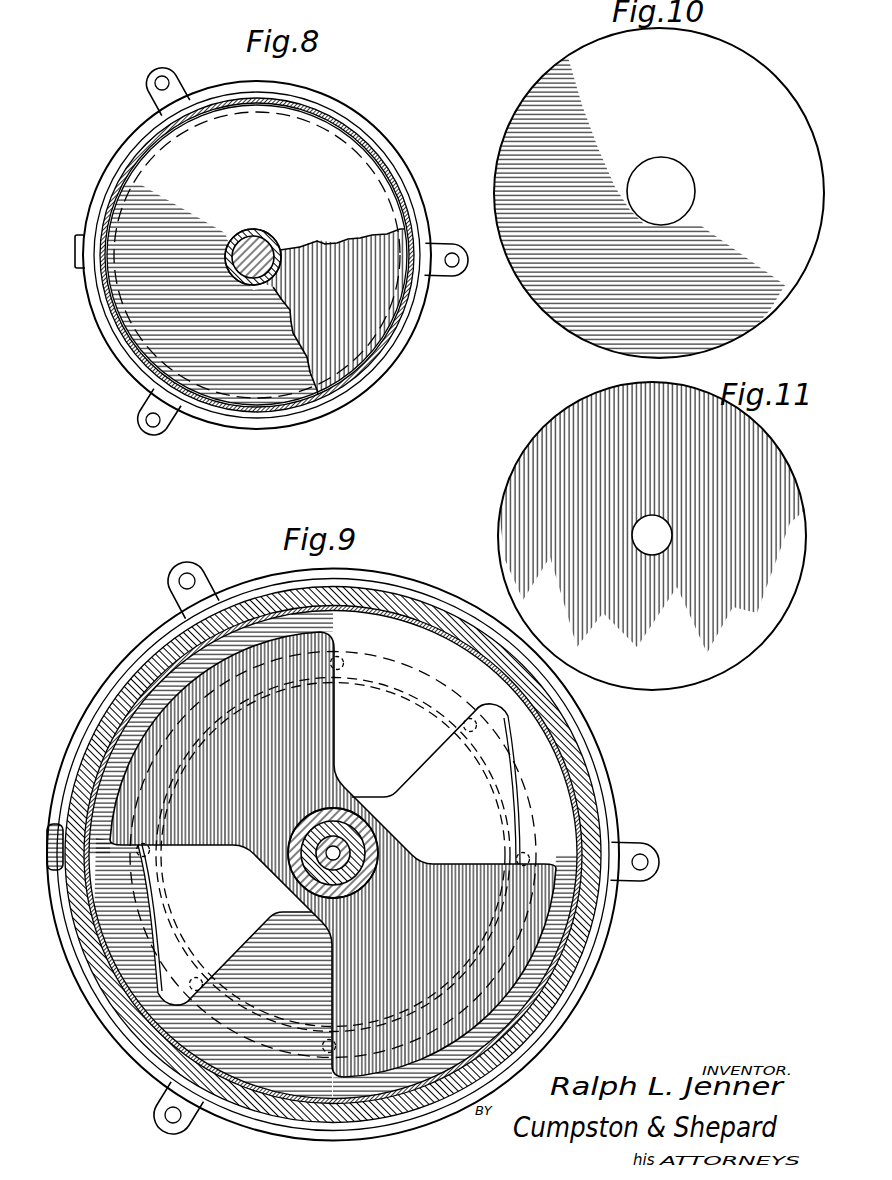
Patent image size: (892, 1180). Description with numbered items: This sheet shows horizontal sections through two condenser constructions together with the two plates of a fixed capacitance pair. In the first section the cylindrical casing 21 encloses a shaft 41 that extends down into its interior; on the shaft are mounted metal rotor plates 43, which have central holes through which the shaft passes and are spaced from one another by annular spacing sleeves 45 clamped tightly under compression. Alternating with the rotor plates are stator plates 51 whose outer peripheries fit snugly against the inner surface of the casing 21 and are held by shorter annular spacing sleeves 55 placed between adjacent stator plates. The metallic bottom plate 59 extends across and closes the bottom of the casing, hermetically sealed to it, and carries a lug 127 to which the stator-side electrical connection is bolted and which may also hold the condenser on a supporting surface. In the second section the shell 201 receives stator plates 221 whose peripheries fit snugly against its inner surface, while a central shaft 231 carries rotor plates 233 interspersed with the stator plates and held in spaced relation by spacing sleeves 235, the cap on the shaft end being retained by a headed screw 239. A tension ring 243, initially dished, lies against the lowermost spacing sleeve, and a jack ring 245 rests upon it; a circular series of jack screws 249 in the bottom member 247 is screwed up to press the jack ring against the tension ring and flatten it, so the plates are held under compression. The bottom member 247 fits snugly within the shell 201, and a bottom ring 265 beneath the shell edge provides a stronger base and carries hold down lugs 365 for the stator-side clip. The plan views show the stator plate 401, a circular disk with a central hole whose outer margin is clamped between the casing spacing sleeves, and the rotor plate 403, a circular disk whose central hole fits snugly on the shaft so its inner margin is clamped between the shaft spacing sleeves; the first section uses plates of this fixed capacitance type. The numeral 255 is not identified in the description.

In FIG. 8, the casing 21 is at (397, 193).
In FIG. 8, the spacing sleeve 55 is at (398, 190).
In FIG. 8, the shaft 41 is at (260, 233).
In FIG. 8, the annular spacing sleeve 45 is at (273, 240).
In FIG. 8, the stator plate 51 is at (251, 262).
In FIG. 8, the lug 127 is at (453, 245).
In FIG. 8, the rotor plate 43 is at (388, 303).
In FIG. 8, the bottom plate 59 is at (393, 360).
In FIG. 9, the rotor plate 233 is at (327, 737).
In FIG. 9, the jack screw 249 is at (477, 726).
In FIG. 9, the bottom ring 265 is at (588, 755).
In FIG. 9, the shell 201 is at (590, 792).
In FIG. 9, the packing 255 is at (580, 808).
In FIG. 9, the hold down lug 365 is at (647, 845).
In FIG. 9, the jack ring 245 is at (467, 753).
In FIG. 9, the tension ring 243 is at (513, 798).
In FIG. 9, the spacing sleeve 235 is at (362, 830).
In FIG. 9, the central shaft 231 is at (368, 843).
In FIG. 9, the headed screw 239 is at (351, 856).
In FIG. 9, the bottom member 247 is at (333, 855).
In FIG. 9, the stator plate 221 is at (267, 943).
In FIG. 10, the stator plate 401 is at (792, 107).
In FIG. 11, the rotor plate 403 is at (782, 465).